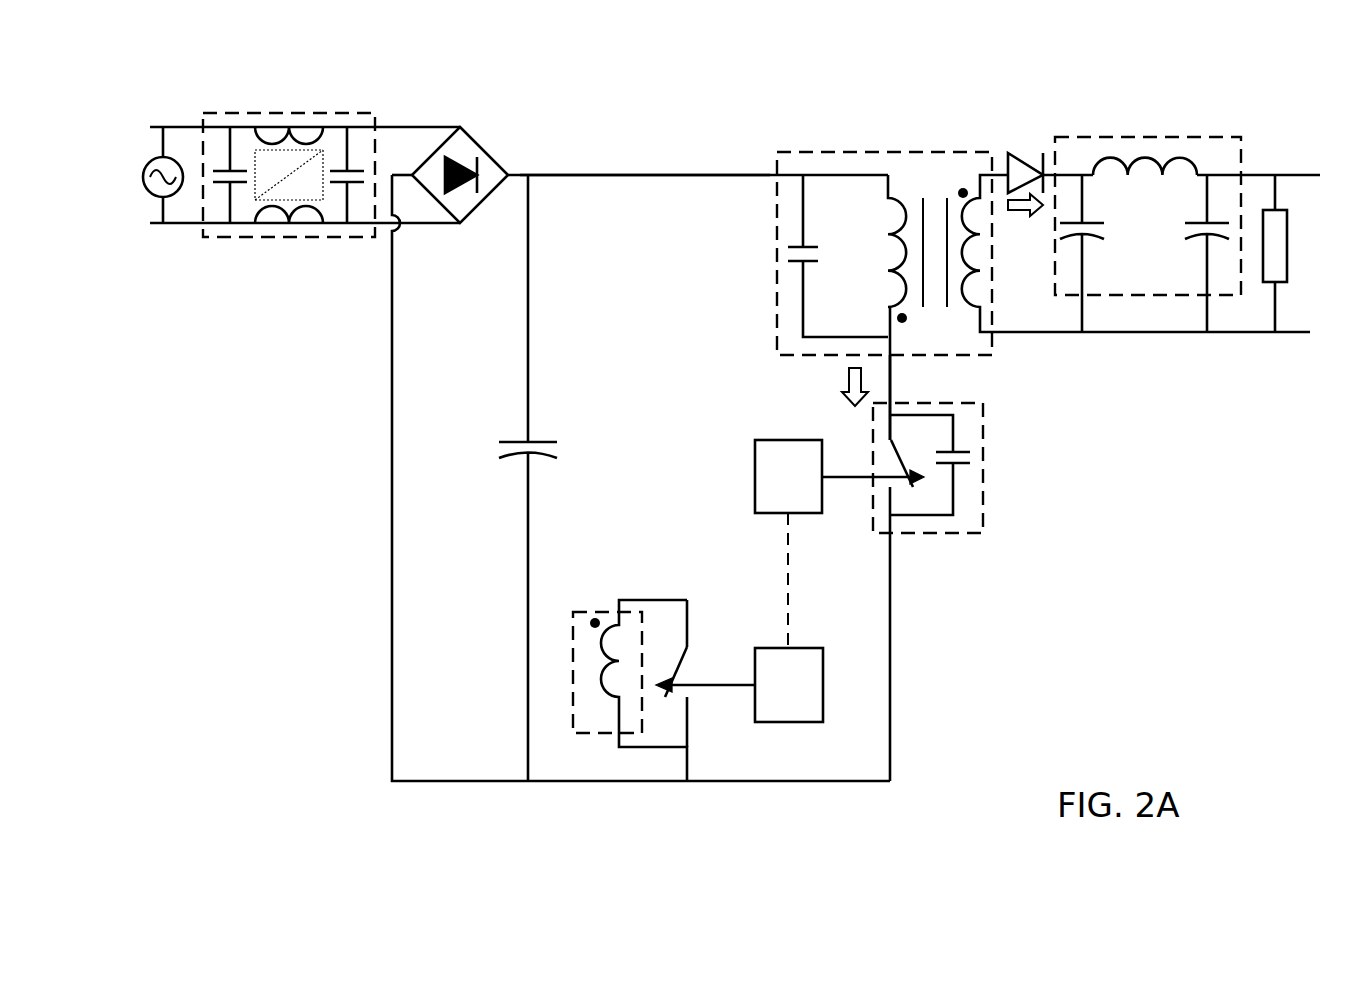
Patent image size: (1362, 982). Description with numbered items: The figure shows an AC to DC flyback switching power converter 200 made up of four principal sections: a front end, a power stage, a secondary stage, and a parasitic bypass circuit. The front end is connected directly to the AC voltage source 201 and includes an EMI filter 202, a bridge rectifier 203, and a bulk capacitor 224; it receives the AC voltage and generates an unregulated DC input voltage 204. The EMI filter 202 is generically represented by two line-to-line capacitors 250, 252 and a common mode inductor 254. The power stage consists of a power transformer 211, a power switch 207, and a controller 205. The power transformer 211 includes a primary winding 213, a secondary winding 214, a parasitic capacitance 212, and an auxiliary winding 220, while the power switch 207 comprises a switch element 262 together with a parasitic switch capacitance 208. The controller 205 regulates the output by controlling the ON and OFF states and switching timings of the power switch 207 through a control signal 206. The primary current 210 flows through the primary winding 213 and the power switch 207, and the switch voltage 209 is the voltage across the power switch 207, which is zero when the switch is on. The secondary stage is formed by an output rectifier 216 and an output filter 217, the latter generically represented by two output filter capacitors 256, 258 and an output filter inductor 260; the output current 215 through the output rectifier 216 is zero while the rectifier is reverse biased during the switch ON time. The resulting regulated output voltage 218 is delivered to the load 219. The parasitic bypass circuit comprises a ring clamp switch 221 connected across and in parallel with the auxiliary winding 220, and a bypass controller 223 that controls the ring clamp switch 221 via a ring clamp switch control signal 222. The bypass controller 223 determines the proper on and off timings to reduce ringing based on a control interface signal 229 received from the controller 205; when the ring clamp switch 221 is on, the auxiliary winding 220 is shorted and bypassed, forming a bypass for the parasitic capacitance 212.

The AC to DC flyback switching power converter 200 is at (1140, 538).
The AC voltage source 201 is at (158, 160).
The EMI filter 202 is at (303, 113).
The bridge rectifier 203 is at (485, 148).
The DC input voltage 204 is at (748, 175).
The controller 205 is at (787, 440).
The control signal 206 is at (848, 479).
The power switch 207 is at (985, 504).
The parasitic switch capacitance 208 is at (963, 450).
The switch voltage 209 is at (893, 378).
The primary current 210 is at (843, 372).
The power transformer 211 is at (925, 150).
The parasitic capacitance 212 is at (818, 247).
The primary winding 213 is at (897, 238).
The secondary winding 214 is at (966, 298).
The output current 215 is at (1027, 216).
The output rectifier 216 is at (1027, 154).
The output filter 217 is at (1207, 137).
The regulated output voltage 218 is at (1288, 175).
The load 219 is at (1288, 258).
The auxiliary winding 220 is at (607, 677).
The ring clamp switch 221 is at (680, 668).
The ring clamp switch control signal 222 is at (714, 688).
The bypass controller 223 is at (823, 705).
The bulk capacitor 224 is at (514, 440).
The control interface signal 229 is at (790, 563).
The line-to-line capacitor 250 is at (225, 170).
The line-to-line capacitor 252 is at (358, 170).
The common mode inductor 254 is at (320, 150).
The output filter capacitor 256 is at (1080, 222).
The output filter capacitor 258 is at (1222, 222).
The output filter inductor 260 is at (1107, 156).
The switch element 262 is at (900, 462).